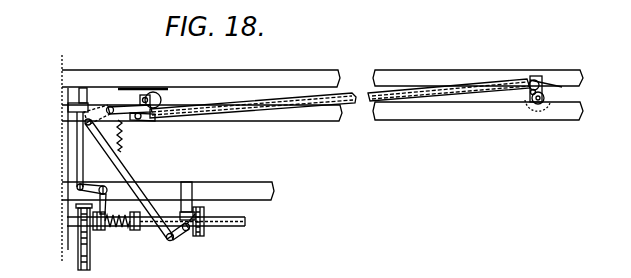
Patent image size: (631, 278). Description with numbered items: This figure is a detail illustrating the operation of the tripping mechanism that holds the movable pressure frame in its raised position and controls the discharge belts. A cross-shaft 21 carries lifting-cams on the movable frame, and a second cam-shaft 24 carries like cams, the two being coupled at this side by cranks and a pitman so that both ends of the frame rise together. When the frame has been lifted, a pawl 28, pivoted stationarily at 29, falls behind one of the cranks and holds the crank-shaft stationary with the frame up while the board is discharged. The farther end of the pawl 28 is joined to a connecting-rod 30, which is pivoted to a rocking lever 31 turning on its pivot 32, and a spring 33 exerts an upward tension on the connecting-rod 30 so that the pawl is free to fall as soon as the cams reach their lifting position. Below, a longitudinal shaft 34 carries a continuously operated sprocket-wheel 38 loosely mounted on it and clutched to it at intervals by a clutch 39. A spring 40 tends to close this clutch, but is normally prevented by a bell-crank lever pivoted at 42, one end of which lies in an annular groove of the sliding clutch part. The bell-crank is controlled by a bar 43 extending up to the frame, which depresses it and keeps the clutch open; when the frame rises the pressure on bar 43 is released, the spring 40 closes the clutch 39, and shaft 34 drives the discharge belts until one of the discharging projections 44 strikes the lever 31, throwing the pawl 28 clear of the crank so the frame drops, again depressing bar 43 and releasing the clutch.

The cross-shaft 21 is at (147, 97).
The second cam-shaft 24 is at (540, 105).
The pawl 28 is at (126, 106).
The stationary pivot 29 is at (110, 106).
The connecting-rod 30 is at (123, 168).
The rocking lever 31 is at (173, 240).
The pivot 32 is at (185, 231).
The spring 33 is at (123, 143).
The shaft 34 is at (232, 227).
The sprocket-wheel 38 is at (82, 233).
The clutch 39 is at (103, 230).
The spring 40 is at (122, 231).
The pivot 42 is at (103, 186).
The bar 43 is at (75, 142).
The discharging projections 44 is at (197, 214).